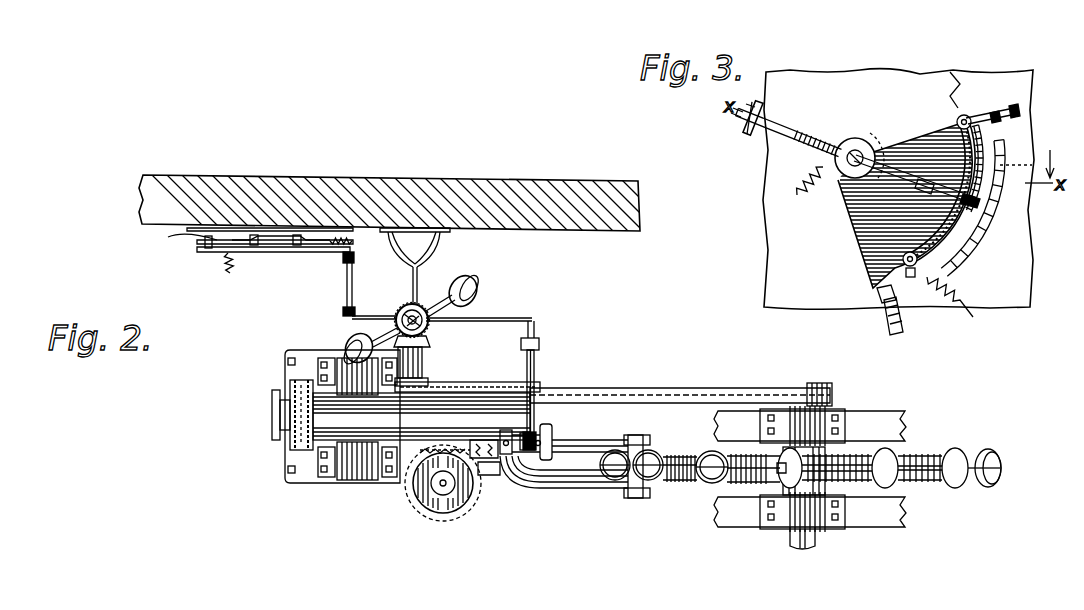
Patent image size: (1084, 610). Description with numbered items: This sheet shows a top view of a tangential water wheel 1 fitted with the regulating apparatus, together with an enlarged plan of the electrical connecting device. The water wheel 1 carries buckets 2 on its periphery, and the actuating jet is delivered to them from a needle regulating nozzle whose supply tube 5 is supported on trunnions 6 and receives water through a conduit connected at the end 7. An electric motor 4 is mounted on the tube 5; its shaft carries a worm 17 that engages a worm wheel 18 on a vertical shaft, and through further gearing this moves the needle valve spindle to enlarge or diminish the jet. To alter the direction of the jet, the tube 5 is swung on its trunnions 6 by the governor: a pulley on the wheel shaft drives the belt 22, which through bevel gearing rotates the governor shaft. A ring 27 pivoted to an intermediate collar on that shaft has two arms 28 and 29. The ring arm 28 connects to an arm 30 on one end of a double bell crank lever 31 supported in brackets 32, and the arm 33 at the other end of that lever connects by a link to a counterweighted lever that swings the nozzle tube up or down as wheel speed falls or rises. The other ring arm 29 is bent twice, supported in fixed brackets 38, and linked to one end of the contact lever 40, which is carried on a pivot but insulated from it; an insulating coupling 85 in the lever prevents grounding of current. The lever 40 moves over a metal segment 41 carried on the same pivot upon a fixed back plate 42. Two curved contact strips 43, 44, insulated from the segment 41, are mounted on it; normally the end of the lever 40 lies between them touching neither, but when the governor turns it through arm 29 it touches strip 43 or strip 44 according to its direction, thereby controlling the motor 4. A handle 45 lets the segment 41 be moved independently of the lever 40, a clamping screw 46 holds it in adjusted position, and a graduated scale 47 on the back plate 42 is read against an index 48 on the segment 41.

In FIG. 2, the tangential water wheel 1 is at (841, 477).
In FIG. 2, the buckets 2 is at (964, 458).
In FIG. 2, the electric motor 4 is at (552, 432).
In FIG. 2, the supply tube 5 is at (395, 429).
In FIG. 2, the trunnions 6 is at (348, 480).
In FIG. 2, the end 7 is at (274, 415).
In FIG. 2, the worm 17 is at (430, 470).
In FIG. 2, the worm wheel 18 is at (443, 521).
In FIG. 2, the belt 22 is at (614, 446).
In FIG. 2, the ring 27 is at (403, 308).
In FIG. 2, the ring arm 28 is at (466, 328).
In FIG. 2, the ring arm 29 is at (290, 255).
In FIG. 2, the arm 30 is at (520, 326).
In FIG. 2, the double bell crank lever 31 is at (550, 399).
In FIG. 2, the brackets 32 is at (540, 340).
In FIG. 2, the arm 33 is at (507, 478).
In FIG. 2, the fixed brackets 38 is at (343, 311).
In FIG. 2, the contact lever 40 is at (300, 250).
In FIG. 3, the contact lever 40 is at (786, 129).
In FIG. 2, the metal segment 41 is at (292, 228).
In FIG. 3, the metal segment 41 is at (862, 250).
In FIG. 3, the back plate 42 is at (997, 313).
In FIG. 3, the contact strip 43 is at (953, 125).
In FIG. 3, the contact strip 44 is at (937, 250).
In FIG. 3, the handle 45 is at (874, 322).
In FIG. 3, the clamping screw 46 is at (1020, 112).
In FIG. 3, the graduated scale 47 is at (978, 202).
In FIG. 3, the index 48 is at (1000, 220).
In FIG. 3, the insulating coupling 85 is at (750, 140).